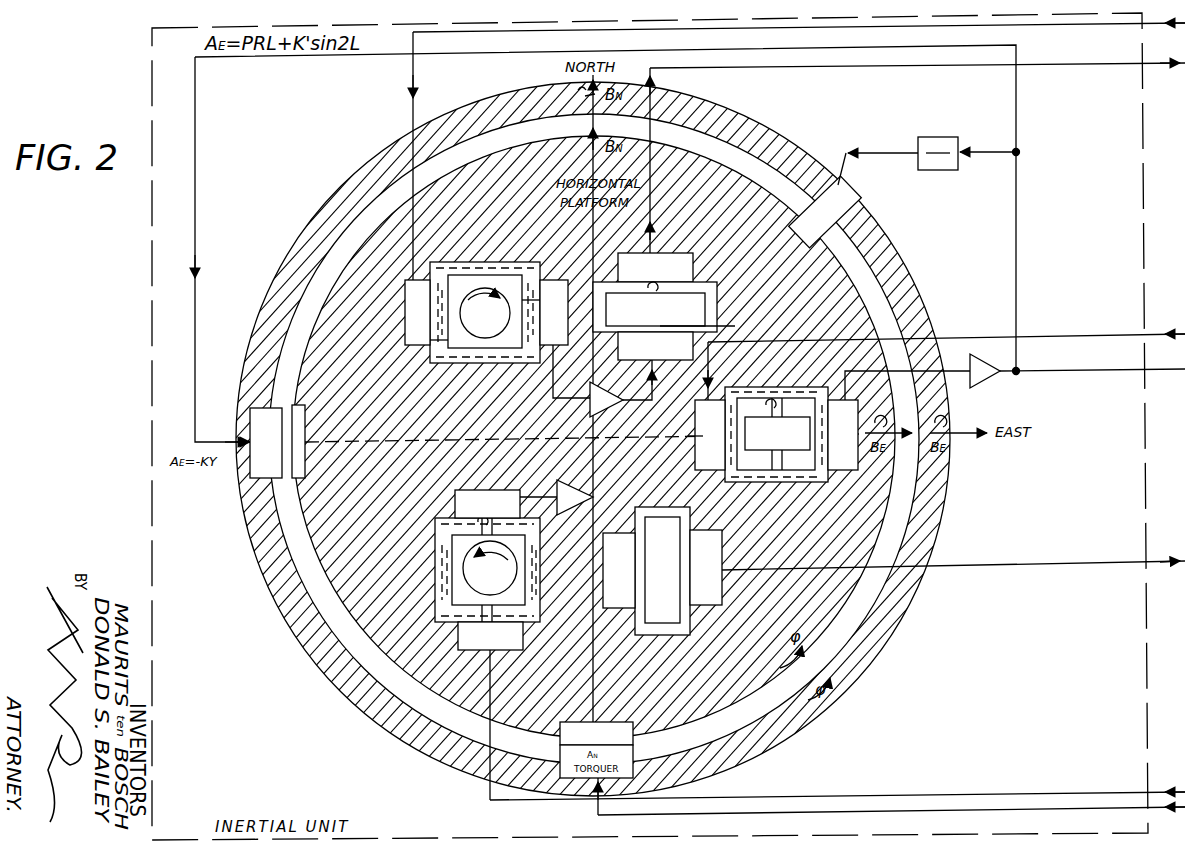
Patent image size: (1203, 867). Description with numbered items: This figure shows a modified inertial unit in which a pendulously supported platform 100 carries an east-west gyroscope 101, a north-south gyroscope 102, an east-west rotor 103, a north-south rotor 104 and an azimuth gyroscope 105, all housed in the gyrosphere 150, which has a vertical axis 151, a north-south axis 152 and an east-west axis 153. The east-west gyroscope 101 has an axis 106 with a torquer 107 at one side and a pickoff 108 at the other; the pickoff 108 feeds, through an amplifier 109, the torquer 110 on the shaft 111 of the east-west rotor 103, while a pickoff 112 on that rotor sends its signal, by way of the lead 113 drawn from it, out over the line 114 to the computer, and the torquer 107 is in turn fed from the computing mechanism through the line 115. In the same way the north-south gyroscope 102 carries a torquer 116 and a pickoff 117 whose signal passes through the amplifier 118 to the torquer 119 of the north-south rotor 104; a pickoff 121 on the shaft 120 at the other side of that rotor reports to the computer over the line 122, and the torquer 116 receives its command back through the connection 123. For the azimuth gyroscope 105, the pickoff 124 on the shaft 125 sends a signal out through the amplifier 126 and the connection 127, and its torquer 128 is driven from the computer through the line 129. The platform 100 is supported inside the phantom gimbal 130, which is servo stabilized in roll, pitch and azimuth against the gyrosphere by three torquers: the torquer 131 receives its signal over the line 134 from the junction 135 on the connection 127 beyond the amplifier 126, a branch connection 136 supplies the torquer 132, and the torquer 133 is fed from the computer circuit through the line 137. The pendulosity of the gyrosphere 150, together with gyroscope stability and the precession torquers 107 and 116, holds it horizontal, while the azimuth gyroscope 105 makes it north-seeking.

The pendulously supported platform 100 is at (308, 628).
The east-west gyroscope 101 is at (485, 340).
The north-south gyroscope 102 is at (452, 578).
The east-west rotor 103 is at (717, 300).
The north-south rotor 104 is at (690, 628).
The azimuth gyroscope 105 is at (760, 482).
The axis 106 is at (430, 362).
The torquer 107 is at (405, 322).
The pickoff 108 is at (556, 280).
The amplifier 109 is at (605, 408).
The torquer 110 is at (662, 360).
The shaft 111 is at (712, 338).
The pickoff 112 is at (680, 253).
The pickoff output line 113 is at (768, 70).
The line 114 is at (1105, 65).
The line 115 is at (1140, 25).
The torquer 116 is at (507, 650).
The pickoff 117 is at (512, 490).
The amplifier 118 is at (574, 480).
The torquer 119 is at (603, 595).
The shaft 120 is at (650, 623).
The pickoff 121 is at (722, 548).
The line 122 is at (1105, 563).
The connection 123 is at (1110, 793).
The pickoff 124 is at (858, 468).
The shaft 125 is at (718, 470).
The amplifier 126 is at (988, 385).
The connection 127 is at (1105, 371).
The torquer 128 is at (688, 436).
The line 129 is at (1110, 337).
The phantom gimbal 130 is at (402, 740).
The torquer 131 is at (258, 478).
The torquer 132 is at (850, 237).
The torquer 133 is at (650, 742).
The line 134 is at (195, 182).
The junction 135 is at (1020, 374).
The branch connection 136 is at (995, 157).
The line 137 is at (1110, 808).
The gyrosphere 150 is at (848, 640).
The vertical axis 151 is at (595, 437).
The north-south axis 152 is at (585, 90).
The east-west axis 153 is at (975, 442).